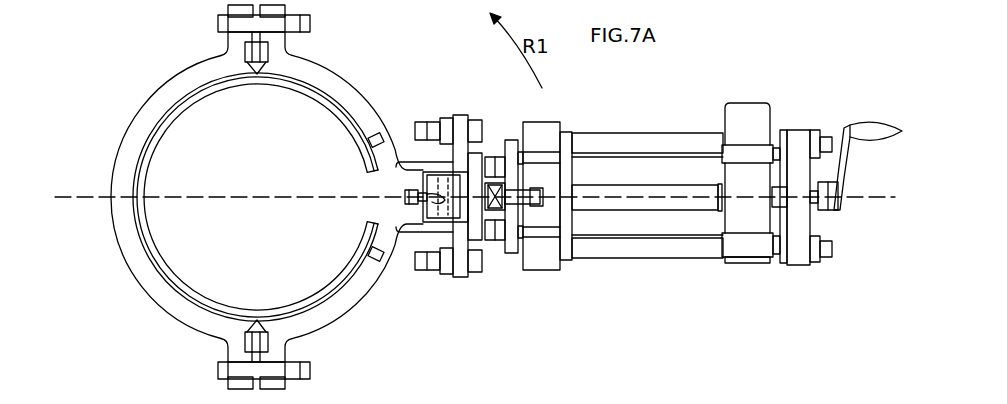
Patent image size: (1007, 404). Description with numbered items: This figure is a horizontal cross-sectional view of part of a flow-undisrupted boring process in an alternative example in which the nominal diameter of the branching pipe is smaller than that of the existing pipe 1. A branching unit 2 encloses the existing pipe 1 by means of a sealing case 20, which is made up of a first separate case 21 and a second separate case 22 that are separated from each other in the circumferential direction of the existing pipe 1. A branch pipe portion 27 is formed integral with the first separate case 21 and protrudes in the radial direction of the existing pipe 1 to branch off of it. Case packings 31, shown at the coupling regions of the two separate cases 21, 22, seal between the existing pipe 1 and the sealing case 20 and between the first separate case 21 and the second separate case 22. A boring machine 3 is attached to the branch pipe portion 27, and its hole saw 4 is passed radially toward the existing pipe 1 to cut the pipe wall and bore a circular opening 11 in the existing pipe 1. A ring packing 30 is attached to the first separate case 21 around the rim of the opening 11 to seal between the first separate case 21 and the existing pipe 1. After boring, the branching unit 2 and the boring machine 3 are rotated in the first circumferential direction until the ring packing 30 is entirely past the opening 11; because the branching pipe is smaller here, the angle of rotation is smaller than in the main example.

The existing pipe 1 is at (167, 271).
The branching unit 2 is at (388, 63).
The boring machine 3 is at (660, 140).
The hole saw 4 is at (422, 160).
The opening 11 is at (377, 203).
The sealing case 20 is at (306, 60).
The first separate case 21 is at (313, 323).
The second separate case 22 is at (200, 320).
The branch pipe portion 27 is at (412, 232).
The ring packing 30 is at (368, 143).
The case packing 31 is at (262, 80).